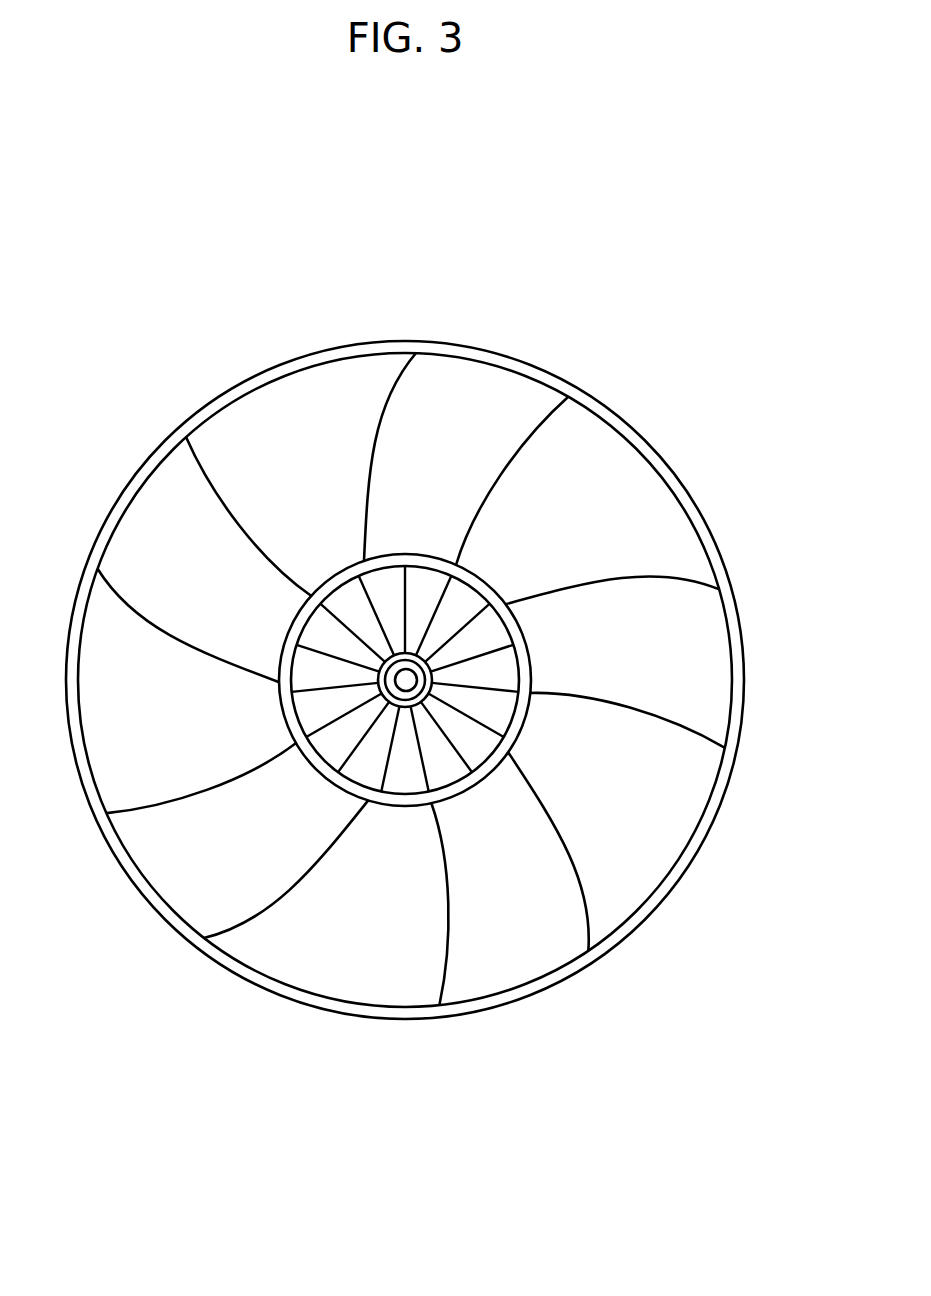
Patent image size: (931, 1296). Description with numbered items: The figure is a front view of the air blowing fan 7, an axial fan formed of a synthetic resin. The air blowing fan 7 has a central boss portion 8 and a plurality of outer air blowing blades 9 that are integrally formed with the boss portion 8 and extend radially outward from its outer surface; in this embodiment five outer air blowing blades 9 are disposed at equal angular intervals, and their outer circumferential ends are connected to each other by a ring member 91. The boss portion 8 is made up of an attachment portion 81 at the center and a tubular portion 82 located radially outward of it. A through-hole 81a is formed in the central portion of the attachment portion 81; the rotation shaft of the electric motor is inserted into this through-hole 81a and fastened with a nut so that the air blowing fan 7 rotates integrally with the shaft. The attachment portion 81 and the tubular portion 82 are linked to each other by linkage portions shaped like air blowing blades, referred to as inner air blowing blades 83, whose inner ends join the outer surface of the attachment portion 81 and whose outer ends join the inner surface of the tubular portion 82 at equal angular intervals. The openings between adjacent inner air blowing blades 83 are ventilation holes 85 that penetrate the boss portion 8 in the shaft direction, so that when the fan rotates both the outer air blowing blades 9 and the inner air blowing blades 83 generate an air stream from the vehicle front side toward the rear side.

The air blowing fan 7 is at (77, 256).
The boss portion 8 is at (402, 680).
The attachment portion 81 is at (403, 708).
The through-hole 81a is at (401, 690).
The tubular portion 82 is at (330, 580).
The inner air blowing blade 83 is at (323, 655).
The ventilation hole 85 is at (423, 585).
The outer air blowing blade 9 is at (490, 385).
The ring member 91 is at (293, 355).